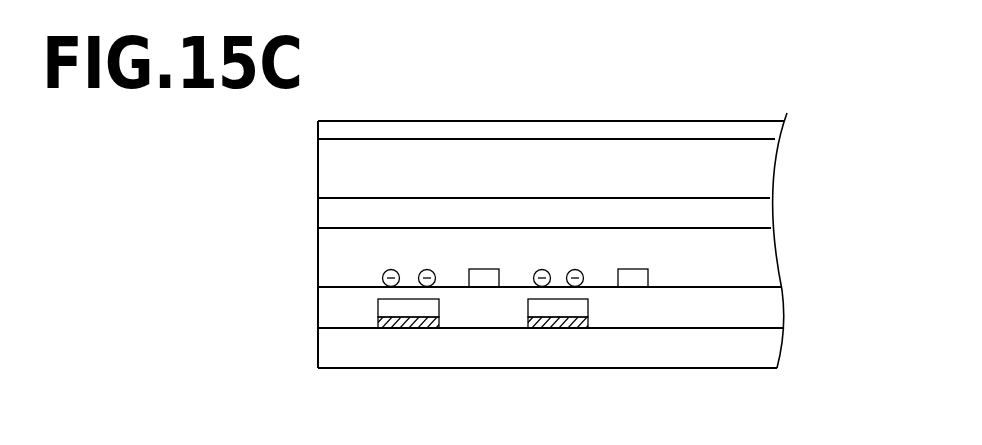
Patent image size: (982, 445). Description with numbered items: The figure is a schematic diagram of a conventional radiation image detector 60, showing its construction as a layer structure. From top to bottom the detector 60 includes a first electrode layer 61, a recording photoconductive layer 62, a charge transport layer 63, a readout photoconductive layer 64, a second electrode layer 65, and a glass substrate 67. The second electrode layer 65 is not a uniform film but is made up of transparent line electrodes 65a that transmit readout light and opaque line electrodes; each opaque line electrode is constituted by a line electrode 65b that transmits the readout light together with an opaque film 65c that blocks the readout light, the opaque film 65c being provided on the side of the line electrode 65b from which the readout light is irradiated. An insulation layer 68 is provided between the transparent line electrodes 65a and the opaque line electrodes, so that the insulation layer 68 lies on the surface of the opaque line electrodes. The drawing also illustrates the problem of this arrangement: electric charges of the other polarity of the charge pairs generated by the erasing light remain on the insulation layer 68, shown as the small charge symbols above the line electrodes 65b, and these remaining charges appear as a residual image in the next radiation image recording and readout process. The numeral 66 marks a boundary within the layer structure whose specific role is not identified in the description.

The radiation image detector 60 is at (800, 82).
The first electrode layer 61 is at (330, 130).
The recording photoconductive layer 62 is at (330, 167).
The charge transport layer 63 is at (330, 215).
The readout photoconductive layer 64 is at (330, 260).
The second electrode layer 65 is at (624, 330).
The transparent line electrodes 65a is at (482, 281).
The line electrode 65b is at (440, 309).
The opaque film 65c is at (392, 328).
The electrode 66 is at (752, 197).
The glass substrate 67 is at (760, 347).
The insulation layer 68 is at (330, 300).